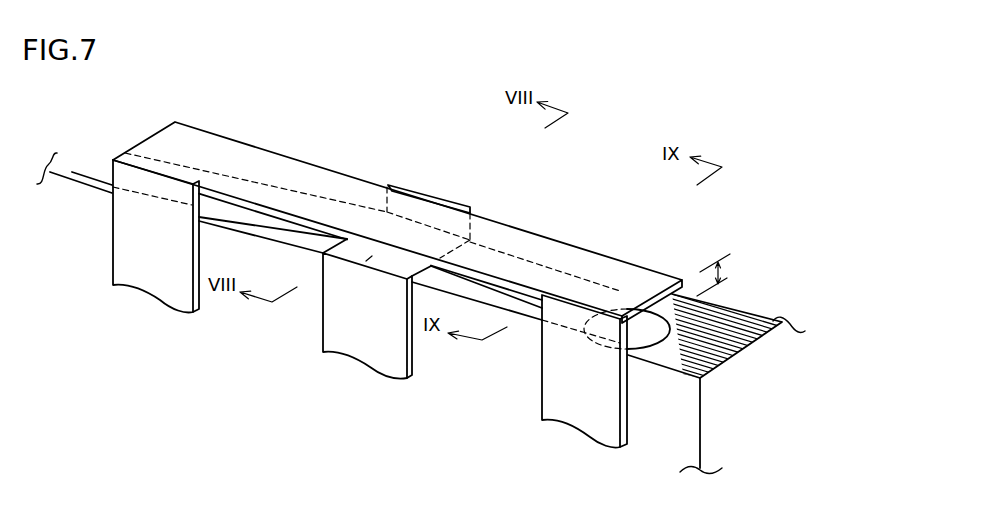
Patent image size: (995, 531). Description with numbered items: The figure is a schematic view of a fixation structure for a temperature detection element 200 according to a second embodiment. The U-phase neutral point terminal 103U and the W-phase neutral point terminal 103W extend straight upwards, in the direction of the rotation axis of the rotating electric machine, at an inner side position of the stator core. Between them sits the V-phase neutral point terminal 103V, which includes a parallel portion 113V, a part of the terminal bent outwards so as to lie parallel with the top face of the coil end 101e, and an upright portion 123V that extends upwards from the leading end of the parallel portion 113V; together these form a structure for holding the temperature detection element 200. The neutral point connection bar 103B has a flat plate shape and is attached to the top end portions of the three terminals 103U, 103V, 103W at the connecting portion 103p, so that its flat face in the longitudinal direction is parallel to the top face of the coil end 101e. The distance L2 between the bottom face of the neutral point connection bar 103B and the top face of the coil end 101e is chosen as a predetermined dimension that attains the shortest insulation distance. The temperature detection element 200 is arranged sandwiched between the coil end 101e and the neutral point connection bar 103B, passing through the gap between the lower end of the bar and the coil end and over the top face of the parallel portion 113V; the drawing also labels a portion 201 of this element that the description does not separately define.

The neutral point connection bar 103B is at (497, 242).
The W-phase neutral point terminal 103W is at (152, 270).
The V-phase neutral point terminal 103V is at (362, 335).
The U-phase neutral point terminal 103U is at (580, 403).
The connecting portion 103p is at (128, 172).
The parallel portion 113V is at (370, 258).
The upright portion 123V is at (397, 184).
The temperature detection element 200 is at (533, 298).
The conductor end loop 201 is at (607, 325).
The coil end 101e is at (742, 333).
The distance L2 is at (722, 275).